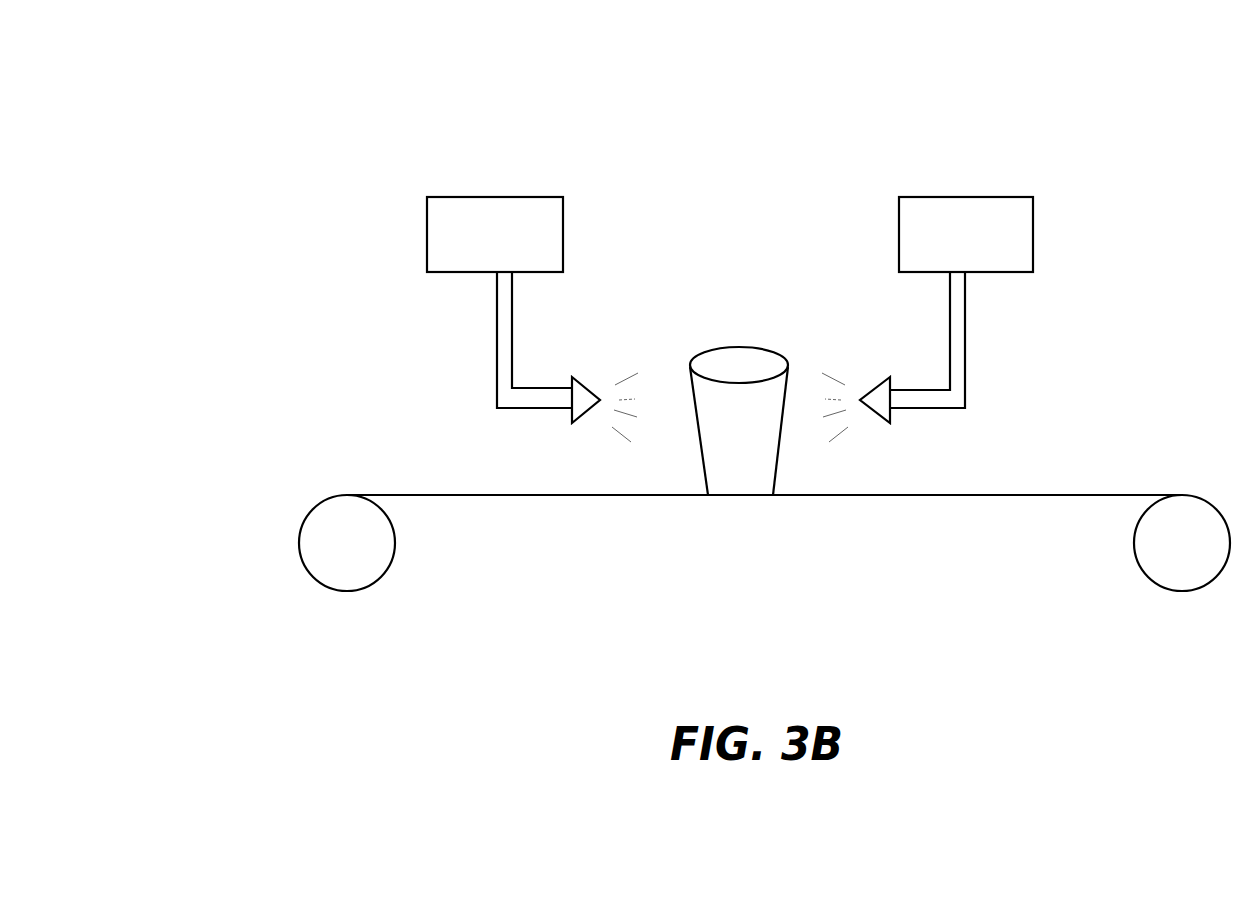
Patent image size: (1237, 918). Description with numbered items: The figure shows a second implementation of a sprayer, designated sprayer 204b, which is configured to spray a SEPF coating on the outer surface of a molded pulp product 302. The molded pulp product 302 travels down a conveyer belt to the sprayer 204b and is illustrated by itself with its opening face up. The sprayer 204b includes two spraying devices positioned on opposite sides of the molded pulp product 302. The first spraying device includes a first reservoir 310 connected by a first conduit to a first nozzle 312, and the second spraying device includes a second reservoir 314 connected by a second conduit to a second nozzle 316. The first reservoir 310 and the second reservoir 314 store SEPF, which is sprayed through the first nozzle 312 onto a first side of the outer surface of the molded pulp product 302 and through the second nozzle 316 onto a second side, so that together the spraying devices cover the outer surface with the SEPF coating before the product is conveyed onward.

The sprayer 204b is at (236, 58).
The molded pulp product 302 is at (747, 347).
The first reservoir 310 is at (490, 197).
The first nozzle 312 is at (573, 378).
The second reservoir 314 is at (955, 197).
The second nozzle 316 is at (876, 380).